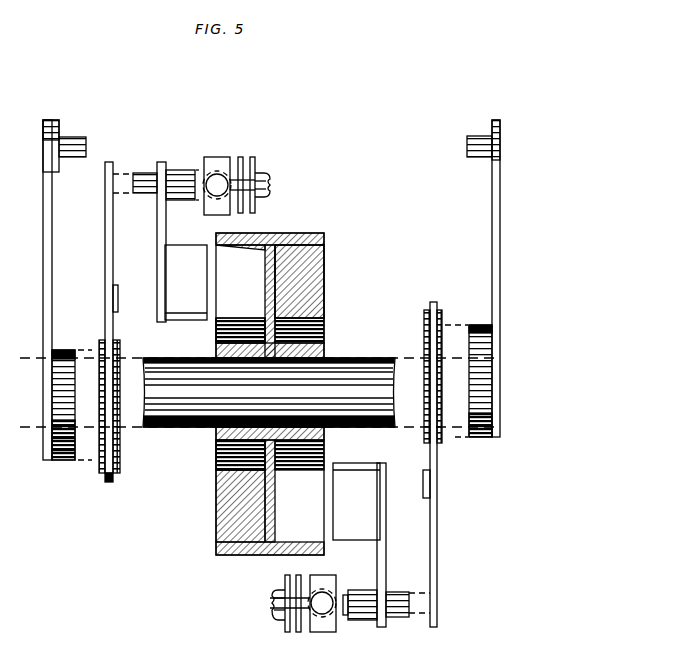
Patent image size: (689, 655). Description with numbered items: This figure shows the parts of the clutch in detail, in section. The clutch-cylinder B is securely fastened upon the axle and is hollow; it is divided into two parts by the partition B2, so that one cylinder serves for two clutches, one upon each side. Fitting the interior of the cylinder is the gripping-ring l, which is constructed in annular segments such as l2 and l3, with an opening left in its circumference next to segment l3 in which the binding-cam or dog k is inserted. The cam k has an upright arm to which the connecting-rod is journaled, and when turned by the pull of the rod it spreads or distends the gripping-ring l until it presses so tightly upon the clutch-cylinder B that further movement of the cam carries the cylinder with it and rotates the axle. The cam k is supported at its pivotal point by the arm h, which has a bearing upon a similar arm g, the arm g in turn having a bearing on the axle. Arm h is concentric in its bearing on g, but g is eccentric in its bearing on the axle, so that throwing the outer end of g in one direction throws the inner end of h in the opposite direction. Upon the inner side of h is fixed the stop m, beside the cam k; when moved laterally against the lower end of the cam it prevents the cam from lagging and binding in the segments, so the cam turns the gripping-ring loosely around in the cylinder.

The arm g is at (43, 232).
The supporting-arm h is at (105, 258).
The stop m is at (118, 304).
The binding-cam or dog k is at (186, 282).
The gripping-ring l is at (216, 250).
The annular segment of gripping-ring l2 is at (216, 493).
The annular segment of gripping-ring l3 is at (220, 310).
The clutch-cylinder B is at (294, 233).
The partition B2 is at (274, 528).